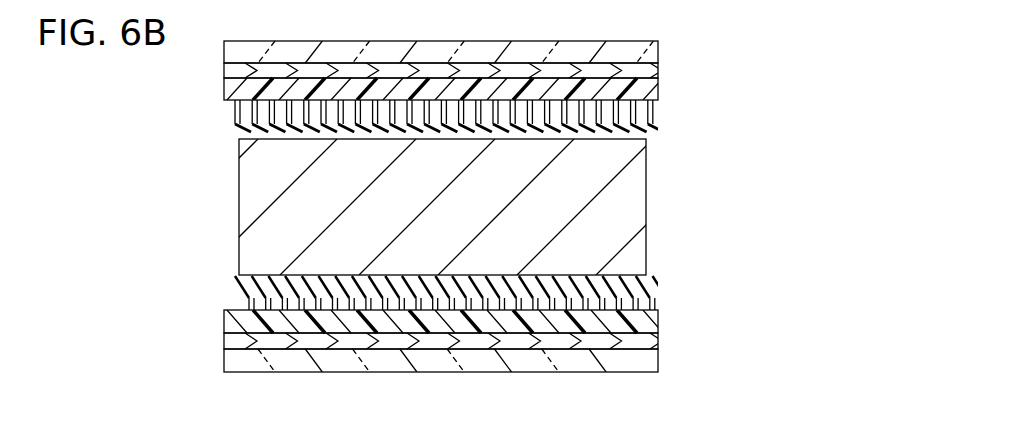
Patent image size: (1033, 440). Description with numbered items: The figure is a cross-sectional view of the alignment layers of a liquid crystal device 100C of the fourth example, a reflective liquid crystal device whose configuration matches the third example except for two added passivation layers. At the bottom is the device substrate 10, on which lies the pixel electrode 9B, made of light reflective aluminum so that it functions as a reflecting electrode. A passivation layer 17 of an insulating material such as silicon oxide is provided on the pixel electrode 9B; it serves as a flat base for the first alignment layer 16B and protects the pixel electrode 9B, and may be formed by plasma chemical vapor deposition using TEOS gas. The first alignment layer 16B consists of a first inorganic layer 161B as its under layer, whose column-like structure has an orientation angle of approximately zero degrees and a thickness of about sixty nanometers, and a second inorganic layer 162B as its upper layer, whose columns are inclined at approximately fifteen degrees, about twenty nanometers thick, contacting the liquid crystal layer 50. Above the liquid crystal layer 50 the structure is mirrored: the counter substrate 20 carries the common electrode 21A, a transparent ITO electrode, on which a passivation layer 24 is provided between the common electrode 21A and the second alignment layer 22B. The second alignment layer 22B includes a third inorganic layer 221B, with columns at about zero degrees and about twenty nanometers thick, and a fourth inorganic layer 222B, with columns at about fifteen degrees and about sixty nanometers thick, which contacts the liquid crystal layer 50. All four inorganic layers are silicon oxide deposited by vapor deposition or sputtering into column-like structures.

The liquid crystal device 100C is at (768, 86).
The counter substrate 20 is at (657, 52).
The common electrode 21A is at (657, 70).
The passivation layer 24 is at (657, 89).
The second alignment layer 22B is at (546, 133).
The third inorganic layer 221B is at (672, 112).
The fourth inorganic layer 222B is at (672, 129).
The liquid crystal layer 50 is at (622, 214).
The first alignment layer 16B is at (552, 287).
The second inorganic layer 162B is at (670, 278).
The first inorganic layer 161B is at (678, 300).
The passivation layer 17 is at (658, 327).
The pixel electrode 9B is at (658, 342).
The device substrate 10 is at (658, 363).